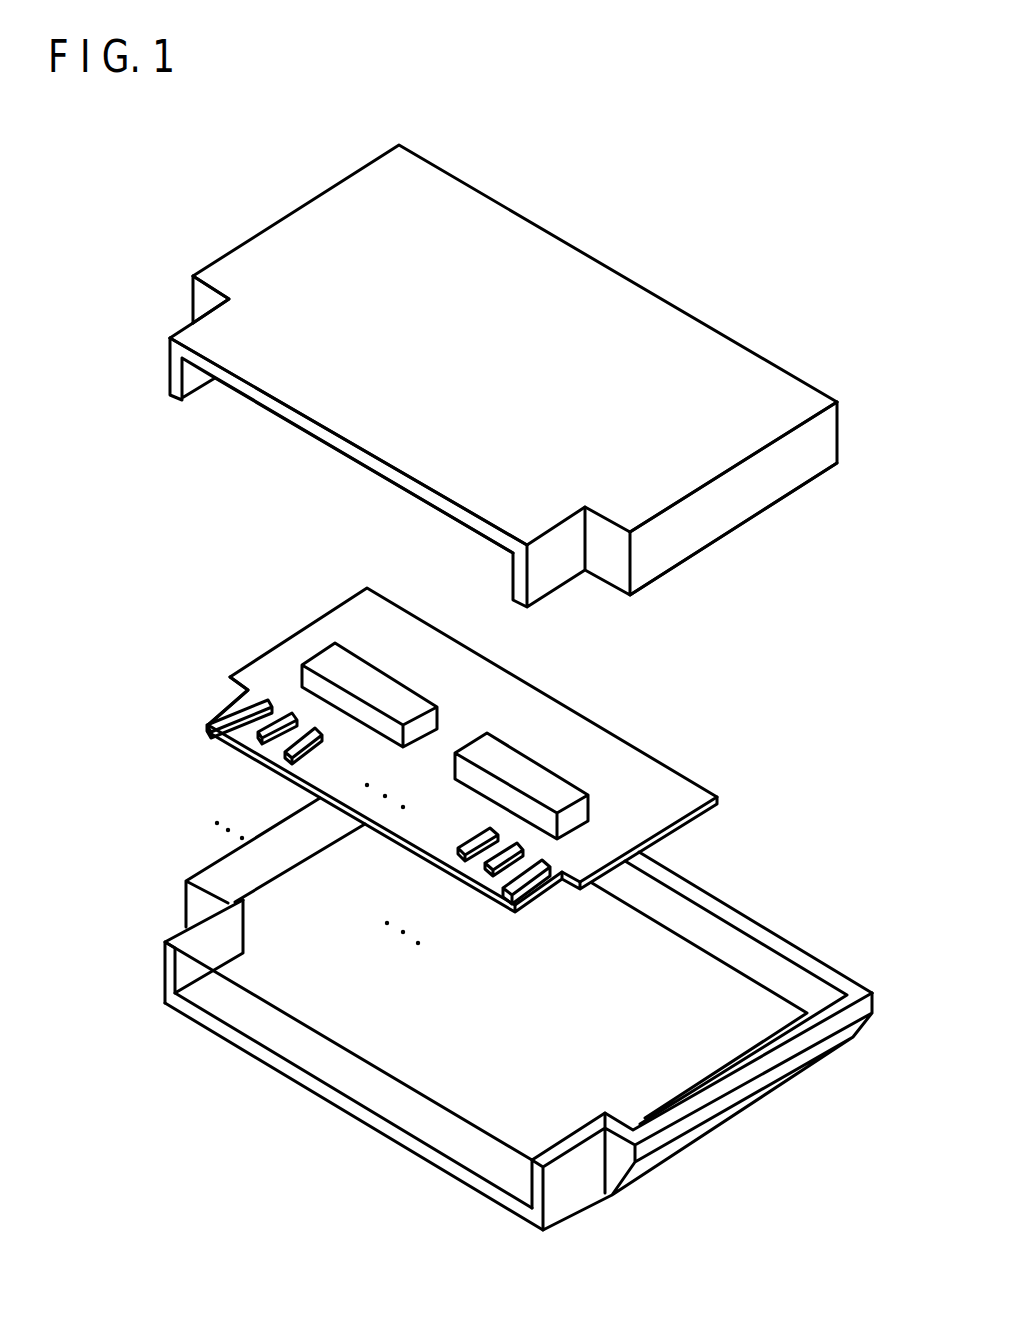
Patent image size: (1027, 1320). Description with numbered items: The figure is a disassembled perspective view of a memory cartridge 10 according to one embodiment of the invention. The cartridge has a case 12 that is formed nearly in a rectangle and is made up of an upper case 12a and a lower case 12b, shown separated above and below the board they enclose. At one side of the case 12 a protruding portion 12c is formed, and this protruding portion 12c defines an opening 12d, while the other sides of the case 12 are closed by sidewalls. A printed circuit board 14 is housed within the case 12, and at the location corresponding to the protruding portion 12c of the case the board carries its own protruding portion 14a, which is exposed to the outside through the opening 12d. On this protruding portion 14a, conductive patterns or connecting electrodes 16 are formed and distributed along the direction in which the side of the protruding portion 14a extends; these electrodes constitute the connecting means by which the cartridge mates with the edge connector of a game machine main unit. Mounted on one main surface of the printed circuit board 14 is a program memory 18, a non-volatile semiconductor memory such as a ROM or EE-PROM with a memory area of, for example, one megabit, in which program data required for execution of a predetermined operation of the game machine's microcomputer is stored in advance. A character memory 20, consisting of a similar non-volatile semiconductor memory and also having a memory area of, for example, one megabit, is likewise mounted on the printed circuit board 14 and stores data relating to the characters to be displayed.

The memory cartridge 10 is at (612, 156).
The case 12 is at (675, 282).
The upper case 12a is at (738, 505).
The lower case 12b is at (753, 928).
The protruding portion 12c is at (171, 300).
The opening 12d is at (275, 434).
The printed circuit board 14 is at (557, 723).
The protruding portion 14a is at (222, 679).
The connecting electrodes 16 is at (222, 730).
The program memory 18 is at (333, 660).
The character memory 20 is at (487, 785).